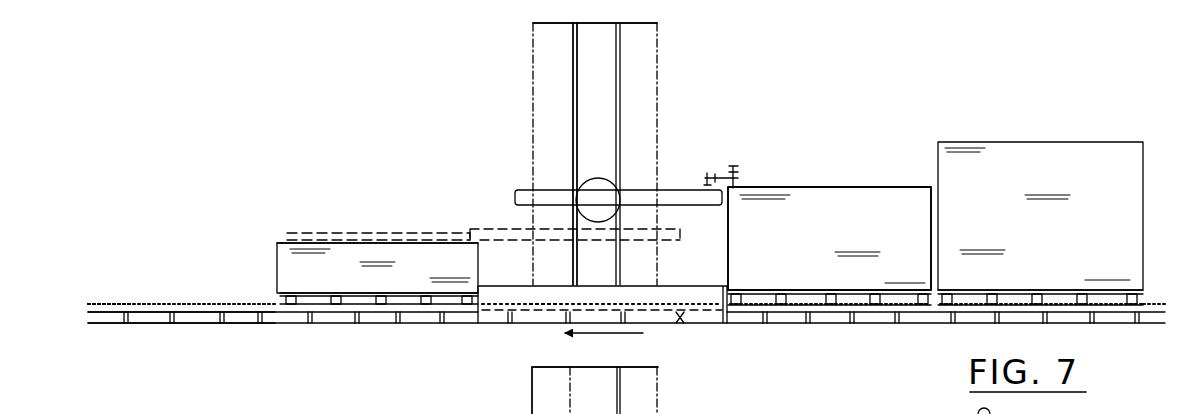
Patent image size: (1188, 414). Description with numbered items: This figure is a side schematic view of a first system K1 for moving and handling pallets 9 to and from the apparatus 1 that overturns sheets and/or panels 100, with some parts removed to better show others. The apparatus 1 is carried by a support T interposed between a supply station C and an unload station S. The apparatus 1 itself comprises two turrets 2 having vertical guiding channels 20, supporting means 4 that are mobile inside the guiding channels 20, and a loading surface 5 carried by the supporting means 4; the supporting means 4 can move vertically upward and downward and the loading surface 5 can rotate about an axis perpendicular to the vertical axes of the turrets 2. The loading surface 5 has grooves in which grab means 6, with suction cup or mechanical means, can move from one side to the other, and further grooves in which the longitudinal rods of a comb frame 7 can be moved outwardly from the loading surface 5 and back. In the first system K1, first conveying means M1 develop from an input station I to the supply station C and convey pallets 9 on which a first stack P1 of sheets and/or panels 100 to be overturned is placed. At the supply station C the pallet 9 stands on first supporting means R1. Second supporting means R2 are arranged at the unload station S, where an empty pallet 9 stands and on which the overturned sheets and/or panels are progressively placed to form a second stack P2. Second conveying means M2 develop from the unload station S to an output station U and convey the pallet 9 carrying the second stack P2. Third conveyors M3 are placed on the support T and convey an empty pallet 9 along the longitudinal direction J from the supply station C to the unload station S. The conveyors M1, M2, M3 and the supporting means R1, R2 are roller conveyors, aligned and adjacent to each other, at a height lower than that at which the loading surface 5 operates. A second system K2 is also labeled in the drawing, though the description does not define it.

The apparatus to overturn sheets and/or panels 1 is at (694, 117).
The turrets 2 is at (648, 90).
The supporting means 4 is at (583, 176).
The loading surface 5 is at (647, 197).
The grab means 6 is at (721, 166).
The comb frame 7 is at (388, 234).
The pallet 9 is at (277, 296).
The vertical guiding channels 20 is at (575, 61).
The sheets and/or panels 100 is at (909, 184).
The first system K1 is at (244, 114).
The second conveyor section K2 is at (443, 390).
The unload station S is at (345, 130).
The output station U is at (176, 205).
The first stack P1 is at (857, 202).
The second stack P2 is at (328, 250).
The first conveying means M1 is at (1150, 304).
The second conveying means M2 is at (132, 297).
The third conveyors M3 is at (546, 306).
The first supporting means R1 is at (846, 313).
The second supporting means R2 is at (332, 316).
The support T is at (698, 295).
The longitudinal direction J is at (595, 354).
The supply station C is at (803, 150).
The input station I is at (1056, 113).